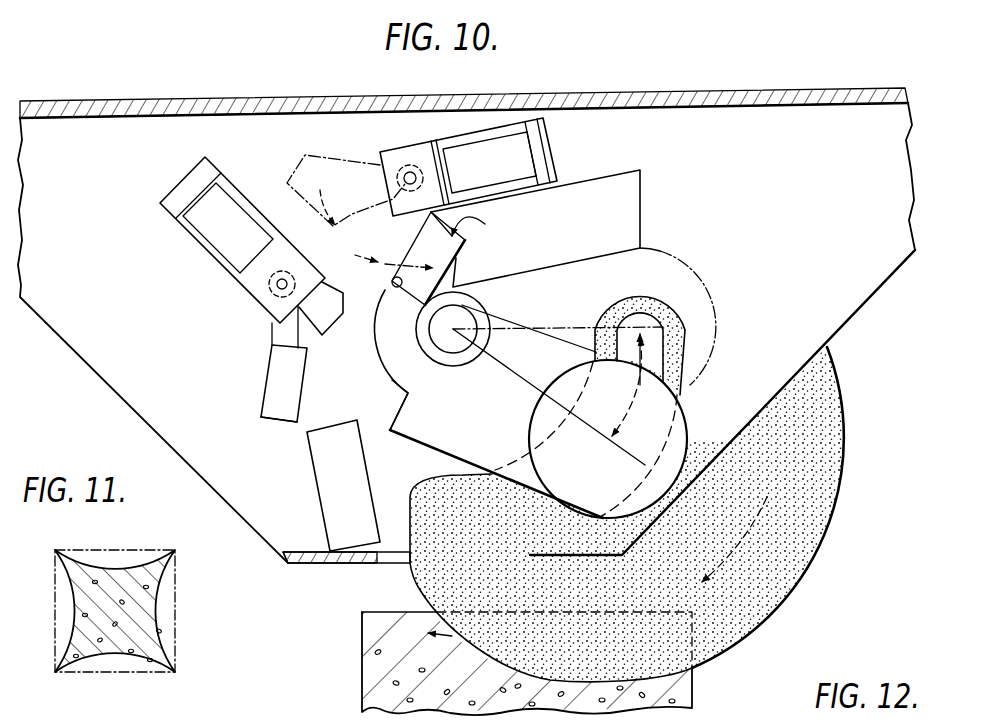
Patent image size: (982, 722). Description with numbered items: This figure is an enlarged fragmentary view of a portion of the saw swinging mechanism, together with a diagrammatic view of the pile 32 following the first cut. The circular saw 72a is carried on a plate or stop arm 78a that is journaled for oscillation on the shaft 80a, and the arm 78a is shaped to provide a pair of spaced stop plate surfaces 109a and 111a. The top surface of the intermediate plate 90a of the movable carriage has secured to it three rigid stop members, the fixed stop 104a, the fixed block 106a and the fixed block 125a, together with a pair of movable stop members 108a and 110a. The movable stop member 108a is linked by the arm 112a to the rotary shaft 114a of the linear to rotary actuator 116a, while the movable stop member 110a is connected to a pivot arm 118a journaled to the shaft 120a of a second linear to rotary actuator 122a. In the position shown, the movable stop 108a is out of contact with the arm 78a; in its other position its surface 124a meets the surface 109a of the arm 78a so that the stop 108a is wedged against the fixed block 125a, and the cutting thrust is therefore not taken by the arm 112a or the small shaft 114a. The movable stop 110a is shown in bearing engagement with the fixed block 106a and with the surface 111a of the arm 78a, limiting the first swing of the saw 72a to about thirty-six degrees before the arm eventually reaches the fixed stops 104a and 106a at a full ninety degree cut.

In FIG. 10, the intermediate plate 90a is at (813, 206).
In FIG. 10, the circular saw 72a is at (815, 483).
In FIG. 10, the pile 32 is at (362, 683).
In FIG. 11, the pile 32 is at (161, 615).
In FIG. 10, the shaft 80a is at (462, 320).
In FIG. 10, the stop arm 78a is at (513, 405).
In FIG. 10, the stop plate surface 109a is at (407, 395).
In FIG. 10, the rigid stop member 106a is at (583, 239).
In FIG. 10, the movable stop member 110a is at (451, 258).
In FIG. 10, the linear to rotary actuator 122a is at (507, 175).
In FIG. 10, the shaft 120a is at (405, 168).
In FIG. 10, the pivot arm 118a is at (413, 228).
In FIG. 10, the stop plate surface 111a is at (376, 256).
In FIG. 10, the linear to rotary actuator 116a is at (200, 233).
In FIG. 10, the rotary shaft 114a is at (272, 289).
In FIG. 10, the arm 112a is at (272, 327).
In FIG. 10, the fixed block 125a is at (327, 320).
In FIG. 10, the movable stop member 108a is at (280, 370).
In FIG. 10, the surface 124a is at (267, 422).
In FIG. 10, the rigid stop member 104a is at (347, 502).